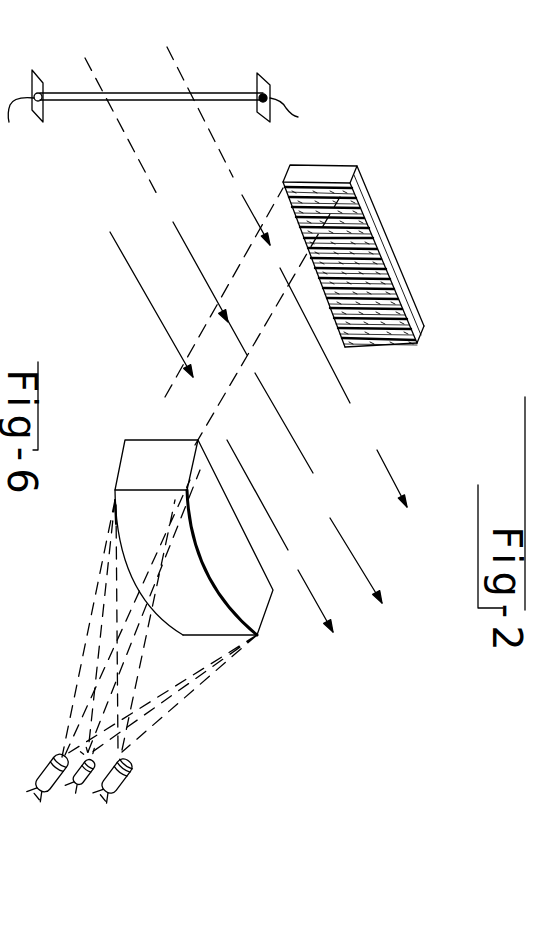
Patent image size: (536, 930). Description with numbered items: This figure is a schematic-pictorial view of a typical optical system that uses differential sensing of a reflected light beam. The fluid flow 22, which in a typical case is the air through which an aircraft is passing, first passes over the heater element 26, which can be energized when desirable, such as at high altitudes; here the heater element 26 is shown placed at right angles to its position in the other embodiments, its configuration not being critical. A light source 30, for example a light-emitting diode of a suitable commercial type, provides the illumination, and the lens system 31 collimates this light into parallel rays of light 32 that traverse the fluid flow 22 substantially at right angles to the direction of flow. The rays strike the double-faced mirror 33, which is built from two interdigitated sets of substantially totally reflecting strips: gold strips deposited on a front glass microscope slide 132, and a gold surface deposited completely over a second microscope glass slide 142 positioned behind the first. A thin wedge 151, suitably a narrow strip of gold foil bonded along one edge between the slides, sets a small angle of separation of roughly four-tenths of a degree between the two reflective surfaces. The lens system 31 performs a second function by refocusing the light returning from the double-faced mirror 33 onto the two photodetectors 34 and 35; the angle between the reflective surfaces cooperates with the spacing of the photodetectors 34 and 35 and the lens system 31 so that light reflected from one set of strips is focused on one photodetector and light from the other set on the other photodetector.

The fluid flow 22 is at (114, 186).
The heater element 26 is at (208, 93).
The second microscope glass slide 142 is at (342, 247).
The thin wedge 151 is at (285, 178).
The glass microscope slide 132 is at (285, 180).
The double-faced mirror 33 is at (407, 347).
The parallel rays of light 32 is at (210, 506).
The lens system 31 is at (263, 623).
The photodetector 34 is at (124, 783).
The light source 30 is at (85, 784).
The photodetector 35 is at (40, 760).